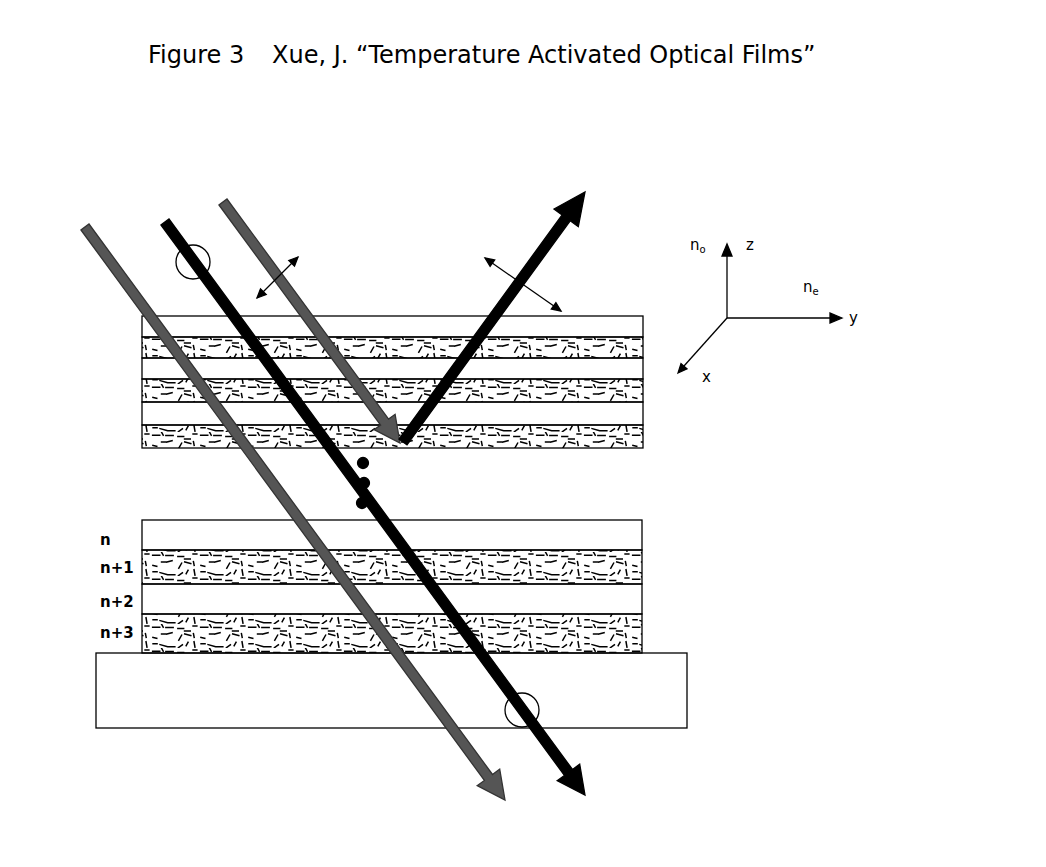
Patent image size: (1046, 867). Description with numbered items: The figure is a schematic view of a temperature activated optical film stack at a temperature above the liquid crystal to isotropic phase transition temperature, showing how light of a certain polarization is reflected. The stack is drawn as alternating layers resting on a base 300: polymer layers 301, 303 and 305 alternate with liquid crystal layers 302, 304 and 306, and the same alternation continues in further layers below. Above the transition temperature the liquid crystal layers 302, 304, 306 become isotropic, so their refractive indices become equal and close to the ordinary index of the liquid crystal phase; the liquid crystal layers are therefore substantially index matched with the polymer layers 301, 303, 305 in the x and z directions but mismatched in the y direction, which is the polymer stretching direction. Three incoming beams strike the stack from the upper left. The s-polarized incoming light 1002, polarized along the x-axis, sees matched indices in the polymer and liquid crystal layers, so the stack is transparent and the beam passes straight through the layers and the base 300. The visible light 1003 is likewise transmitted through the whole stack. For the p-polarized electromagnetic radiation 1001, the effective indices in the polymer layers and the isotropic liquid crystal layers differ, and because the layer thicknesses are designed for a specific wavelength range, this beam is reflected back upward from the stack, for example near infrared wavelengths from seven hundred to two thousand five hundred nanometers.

The substrate 300 is at (391, 690).
The polymer layer 301 is at (371, 326).
The liquid crystal layer 302 is at (371, 347).
The polymer layer 303 is at (371, 368).
The liquid crystal layer 304 is at (371, 390).
The isotropic layer 305 is at (371, 413).
The birefringent layer 306 is at (371, 436).
The p-polarized electromagnetic radiation 1001 is at (309, 306).
The s-polarized incoming light 1002 is at (348, 491).
The visible light 1003 is at (269, 499).